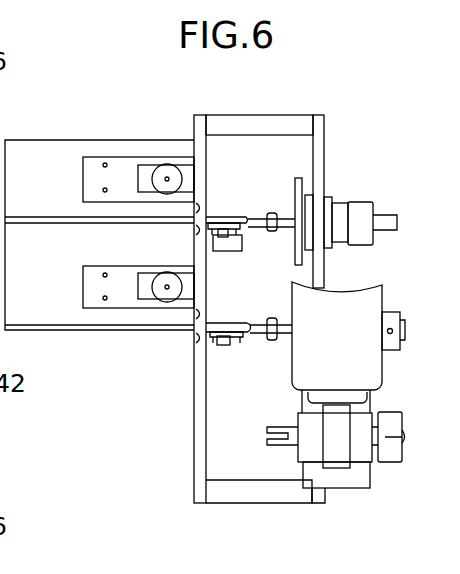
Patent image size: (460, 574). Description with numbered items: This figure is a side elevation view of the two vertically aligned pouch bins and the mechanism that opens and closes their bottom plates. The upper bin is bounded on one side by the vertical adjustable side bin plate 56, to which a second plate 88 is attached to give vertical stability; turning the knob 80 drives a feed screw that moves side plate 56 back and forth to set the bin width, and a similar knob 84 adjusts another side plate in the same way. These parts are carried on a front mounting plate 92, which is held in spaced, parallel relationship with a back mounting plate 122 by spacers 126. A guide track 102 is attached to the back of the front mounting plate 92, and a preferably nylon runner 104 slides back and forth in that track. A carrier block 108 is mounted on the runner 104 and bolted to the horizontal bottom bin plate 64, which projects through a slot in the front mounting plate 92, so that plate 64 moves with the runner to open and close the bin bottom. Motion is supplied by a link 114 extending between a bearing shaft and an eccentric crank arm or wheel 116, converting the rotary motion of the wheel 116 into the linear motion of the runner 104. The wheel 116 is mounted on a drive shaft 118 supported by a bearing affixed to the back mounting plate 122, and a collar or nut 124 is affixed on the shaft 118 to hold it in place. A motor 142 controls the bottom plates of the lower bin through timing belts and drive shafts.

The side bin plate 56 is at (62, 140).
The second plate 88 is at (118, 163).
The knob 80 is at (165, 166).
The knob 84 is at (166, 300).
The front mounting plate 92 is at (202, 114).
The spacers 126 is at (263, 122).
The back mounting plate 122 is at (317, 122).
The bottom bin plate 64 is at (212, 216).
The carrier block 108 is at (232, 231).
The runner 104 is at (226, 238).
The guide track 102 is at (243, 248).
The link 114 is at (270, 212).
The eccentric crank arm or wheel 116 is at (299, 177).
The collar or nut 124 is at (358, 202).
The drive shaft 118 is at (386, 215).
The motor 142 is at (372, 303).